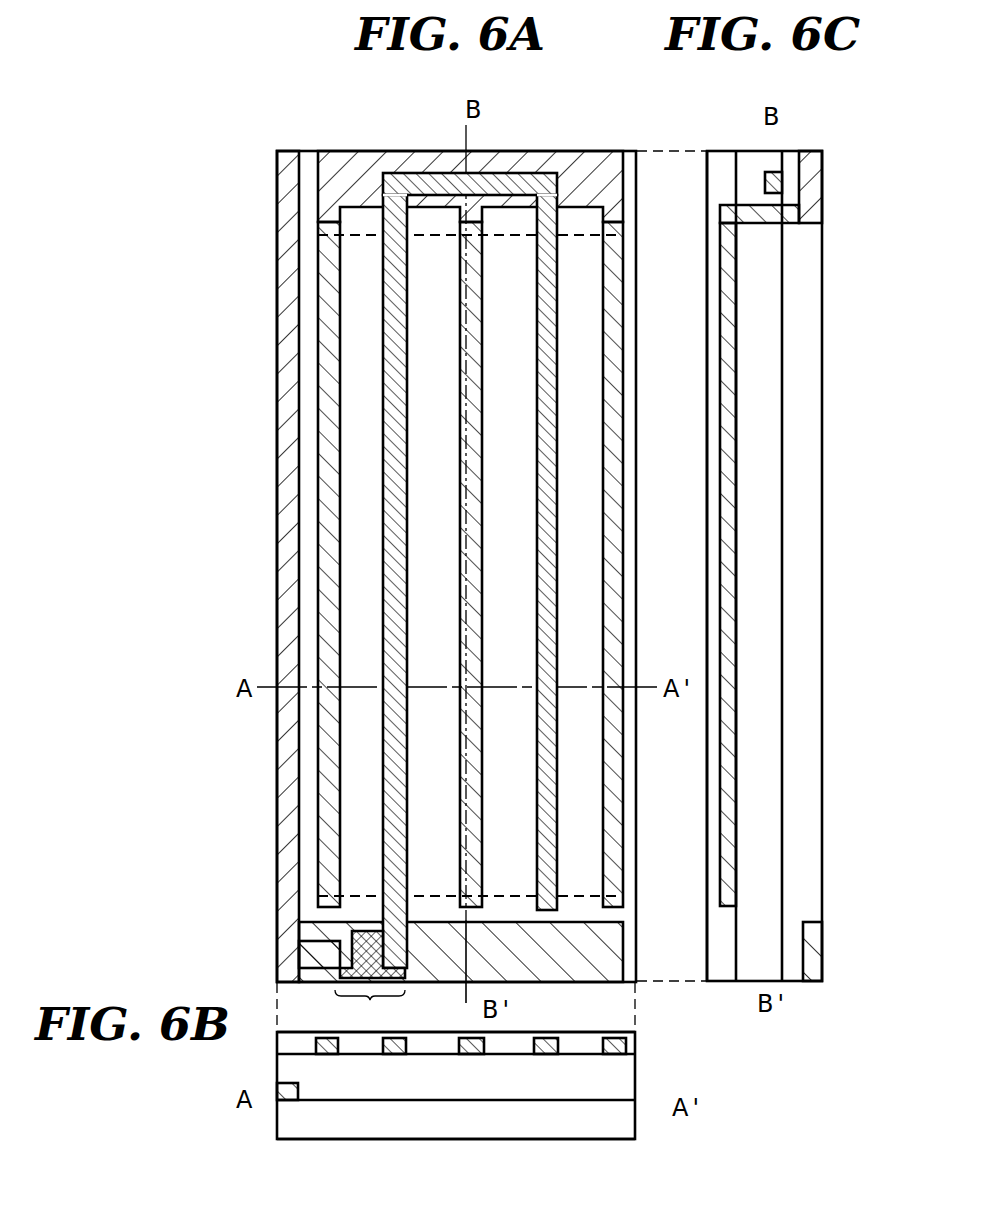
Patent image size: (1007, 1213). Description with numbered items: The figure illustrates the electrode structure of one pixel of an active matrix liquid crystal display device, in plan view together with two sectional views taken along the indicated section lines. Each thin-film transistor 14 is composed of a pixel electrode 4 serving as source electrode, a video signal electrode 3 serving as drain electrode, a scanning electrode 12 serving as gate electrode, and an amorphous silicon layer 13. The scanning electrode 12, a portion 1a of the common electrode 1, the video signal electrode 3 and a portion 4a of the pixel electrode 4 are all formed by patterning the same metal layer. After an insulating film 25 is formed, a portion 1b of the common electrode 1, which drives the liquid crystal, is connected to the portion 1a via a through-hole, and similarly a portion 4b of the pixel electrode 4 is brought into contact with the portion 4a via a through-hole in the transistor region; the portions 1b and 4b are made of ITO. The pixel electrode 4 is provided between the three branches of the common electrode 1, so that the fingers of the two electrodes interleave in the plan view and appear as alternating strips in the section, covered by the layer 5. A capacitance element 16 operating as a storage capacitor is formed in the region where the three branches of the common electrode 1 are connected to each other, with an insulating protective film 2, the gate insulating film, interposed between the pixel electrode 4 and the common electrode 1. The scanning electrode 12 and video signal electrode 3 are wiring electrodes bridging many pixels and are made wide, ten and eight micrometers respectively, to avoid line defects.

In FIG. 6B, the common electrode 1 is at (327, 1054).
In FIG. 6A, the portion of the common electrode 1a is at (340, 192).
In FIG. 6C, the portion of the common electrode 1a is at (810, 216).
In FIG. 6A, the portion of the common electrode for driving the liquid crystal 1b is at (607, 318).
In FIG. 6C, the portion of the common electrode for driving the liquid crystal 1b is at (728, 378).
In FIG. 6C, the insulating protective film 2 is at (800, 585).
In FIG. 6B, the insulating protective film 2 is at (357, 1125).
In FIG. 6A, the video signal electrode 3 is at (277, 310).
In FIG. 6B, the video signal electrode 3 is at (278, 1097).
In FIG. 6B, the pixel electrode 4 is at (397, 1054).
In FIG. 6A, the portion of the pixel electrode 4a is at (408, 955).
In FIG. 6A, the portion of the pixel electrode 4b is at (383, 478).
In FIG. 6C, the protective layer 5 is at (708, 445).
In FIG. 6B, the protective layer 5 is at (626, 1045).
In FIG. 6A, the scanning electrode 12 is at (620, 955).
In FIG. 6C, the scanning electrode 12 is at (820, 939).
In FIG. 6A, the amorphous silicon layer 13 is at (350, 939).
In FIG. 6A, the thin-film transistor 14 is at (370, 1010).
In FIG. 6A, the capacitance element 16 is at (557, 183).
In FIG. 6C, the capacitance element 16 is at (782, 183).
In FIG. 6C, the insulating film 25 is at (765, 712).
In FIG. 6B, the insulating film 25 is at (298, 1072).